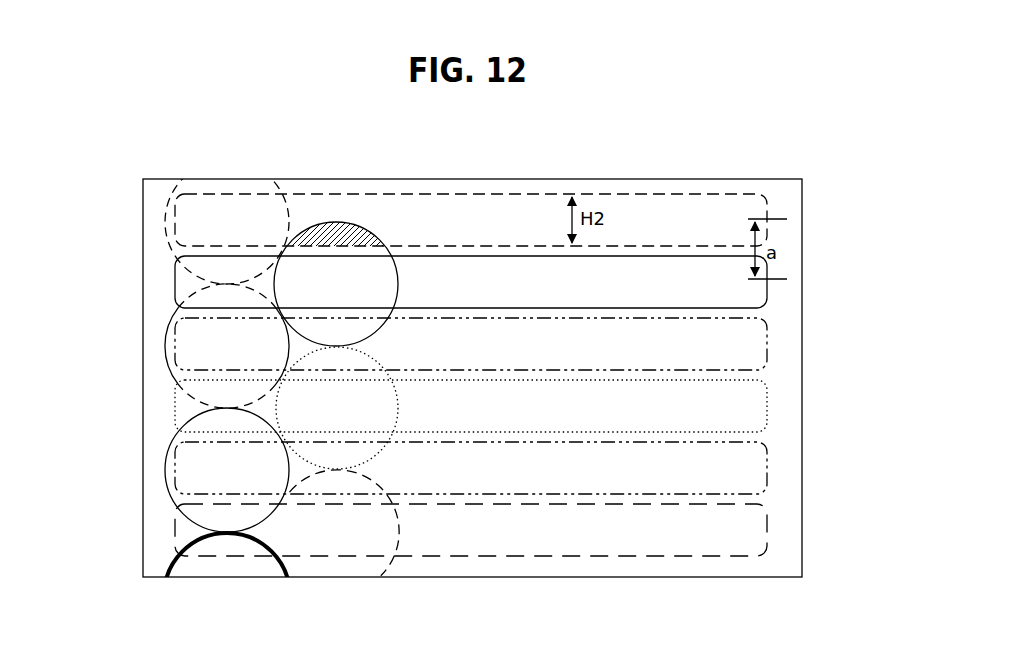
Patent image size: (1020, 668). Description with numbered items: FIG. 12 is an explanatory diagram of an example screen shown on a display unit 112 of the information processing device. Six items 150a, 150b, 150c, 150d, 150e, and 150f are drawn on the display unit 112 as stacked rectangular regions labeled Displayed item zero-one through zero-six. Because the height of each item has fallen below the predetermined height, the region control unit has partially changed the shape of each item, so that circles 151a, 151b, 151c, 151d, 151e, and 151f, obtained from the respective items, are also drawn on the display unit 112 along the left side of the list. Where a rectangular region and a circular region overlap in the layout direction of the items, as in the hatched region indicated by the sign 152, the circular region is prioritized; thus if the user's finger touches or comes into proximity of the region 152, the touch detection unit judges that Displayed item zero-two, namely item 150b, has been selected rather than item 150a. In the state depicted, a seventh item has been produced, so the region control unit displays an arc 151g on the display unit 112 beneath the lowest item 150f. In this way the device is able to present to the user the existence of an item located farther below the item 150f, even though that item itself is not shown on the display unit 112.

The display unit 112 is at (583, 176).
The item 150a is at (765, 203).
The item 150b is at (767, 293).
The item 150c is at (767, 339).
The item 150d is at (767, 401).
The item 150e is at (767, 463).
The item 150f is at (767, 525).
The circle 151a is at (165, 224).
The circle 151b is at (213, 285).
The circle 151c is at (165, 348).
The circle 151d is at (227, 407).
The circle 151e is at (165, 471).
The circle 151f is at (210, 533).
The arc 151g is at (170, 573).
The overlap region 152 is at (328, 222).